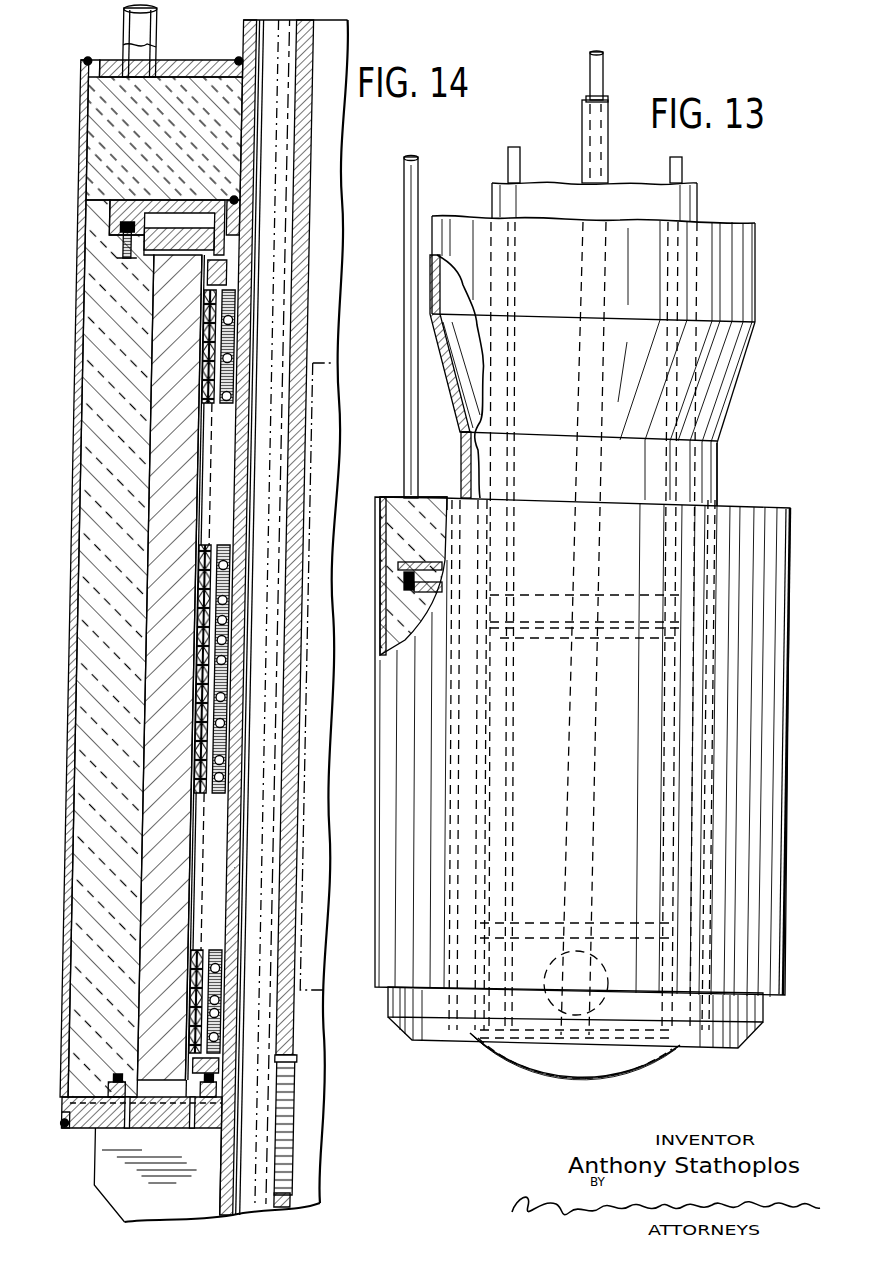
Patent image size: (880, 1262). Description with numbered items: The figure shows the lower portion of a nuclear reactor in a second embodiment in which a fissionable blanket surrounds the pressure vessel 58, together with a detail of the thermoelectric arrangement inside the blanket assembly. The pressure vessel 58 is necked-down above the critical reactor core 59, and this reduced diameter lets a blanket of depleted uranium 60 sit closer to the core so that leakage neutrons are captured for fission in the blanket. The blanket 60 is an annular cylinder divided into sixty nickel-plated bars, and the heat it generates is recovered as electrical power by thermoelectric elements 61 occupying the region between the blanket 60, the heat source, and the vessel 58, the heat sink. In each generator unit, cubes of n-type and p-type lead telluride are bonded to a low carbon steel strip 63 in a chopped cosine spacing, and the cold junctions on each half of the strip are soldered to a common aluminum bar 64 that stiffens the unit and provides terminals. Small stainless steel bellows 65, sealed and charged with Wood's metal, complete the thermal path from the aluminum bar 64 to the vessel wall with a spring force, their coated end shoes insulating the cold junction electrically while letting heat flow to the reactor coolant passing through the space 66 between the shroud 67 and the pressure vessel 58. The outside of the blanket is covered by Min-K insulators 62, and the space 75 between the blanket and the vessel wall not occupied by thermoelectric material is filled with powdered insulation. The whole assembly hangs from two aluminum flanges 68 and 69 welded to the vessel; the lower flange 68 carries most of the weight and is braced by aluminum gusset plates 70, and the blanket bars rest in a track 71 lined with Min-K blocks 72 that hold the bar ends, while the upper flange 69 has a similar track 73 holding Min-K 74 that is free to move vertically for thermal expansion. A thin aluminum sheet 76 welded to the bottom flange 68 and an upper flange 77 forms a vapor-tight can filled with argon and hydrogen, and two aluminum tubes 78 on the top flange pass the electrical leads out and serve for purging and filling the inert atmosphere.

In FIG. 14, the pressure vessel 58 is at (304, 1047).
In FIG. 13, the pressure vessel 58 is at (700, 480).
In FIG. 14, the critical reactor core 59 is at (346, 928).
In FIG. 13, the critical reactor core 59 is at (553, 755).
In FIG. 14, the blanket of depleted uranium 60 is at (173, 657).
In FIG. 13, the blanket of depleted uranium 60 is at (440, 600).
In FIG. 14, the thermoelectric elements 61 is at (215, 598).
In FIG. 14, the insulators 62 is at (114, 440).
In FIG. 13, the insulators 62 is at (400, 605).
In FIG. 14, the low carbon steel strip 63 is at (210, 888).
In FIG. 14, the aluminum bar 64 is at (227, 447).
In FIG. 14, the stainless steel bellows 65 is at (238, 600).
In FIG. 13, the stainless steel bellows 65 is at (405, 572).
In FIG. 14, the space 66 is at (280, 748).
In FIG. 14, the shroud 67 is at (251, 812).
In FIG. 14, the lower flange 68 is at (67, 1136).
In FIG. 14, the upper flange 69 is at (117, 222).
In FIG. 14, the aluminum gusset plates 70 is at (141, 1177).
In FIG. 13, the aluminum gusset plates 70 is at (407, 1005).
In FIG. 14, the track 71 is at (187, 1125).
In FIG. 14, the Min-K blocks 72 is at (242, 1113).
In FIG. 14, the track 73 is at (117, 212).
In FIG. 13, the track 73 is at (443, 567).
In FIG. 14, the Min-K 74 is at (205, 240).
In FIG. 14, the space 75 is at (236, 320).
In FIG. 14, the aluminum sheet 76 is at (82, 495).
In FIG. 13, the aluminum sheet 76 is at (384, 620).
In FIG. 14, the upper flange 77 is at (197, 60).
In FIG. 13, the upper flange 77 is at (432, 497).
In FIG. 14, the aluminum tubes 78 is at (124, 22).
In FIG. 13, the aluminum tubes 78 is at (406, 347).